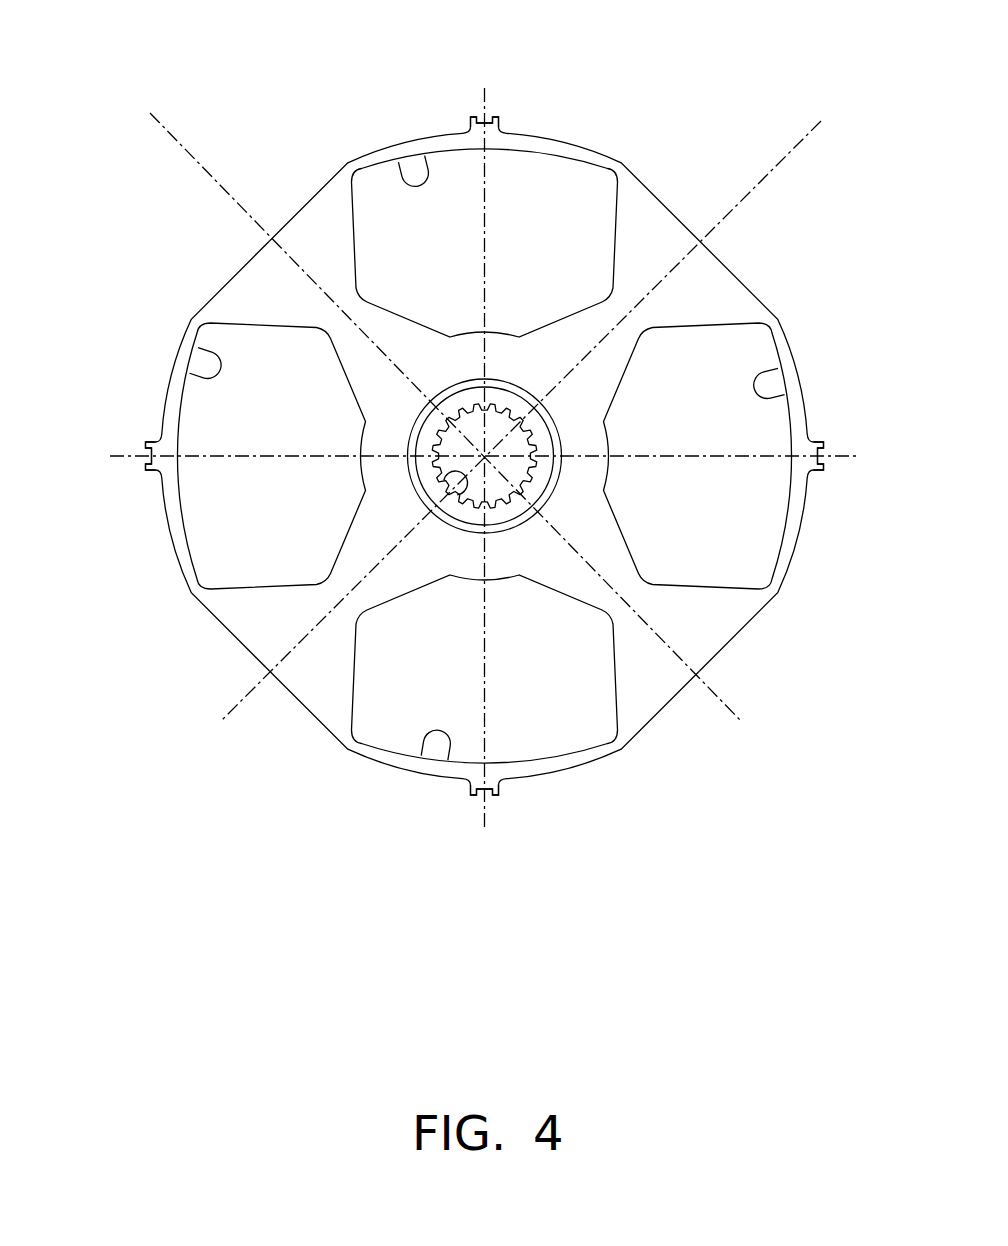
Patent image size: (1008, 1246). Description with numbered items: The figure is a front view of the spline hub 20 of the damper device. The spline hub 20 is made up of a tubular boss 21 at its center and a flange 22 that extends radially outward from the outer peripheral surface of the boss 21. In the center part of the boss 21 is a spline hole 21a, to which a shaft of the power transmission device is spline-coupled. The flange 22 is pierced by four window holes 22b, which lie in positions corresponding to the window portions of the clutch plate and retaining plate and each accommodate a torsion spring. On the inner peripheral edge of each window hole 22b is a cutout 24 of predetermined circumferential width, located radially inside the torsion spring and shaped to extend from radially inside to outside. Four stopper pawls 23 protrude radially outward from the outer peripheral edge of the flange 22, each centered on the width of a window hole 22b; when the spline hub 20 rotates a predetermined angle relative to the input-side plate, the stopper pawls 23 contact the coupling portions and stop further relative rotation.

The spline hub 20 is at (625, 157).
The boss 21 is at (510, 508).
The spline hole 21a is at (460, 482).
The flange 22 is at (660, 232).
The window hole 22b is at (402, 166).
The stopper pawl 23 is at (487, 114).
The cutout 24 is at (405, 314).